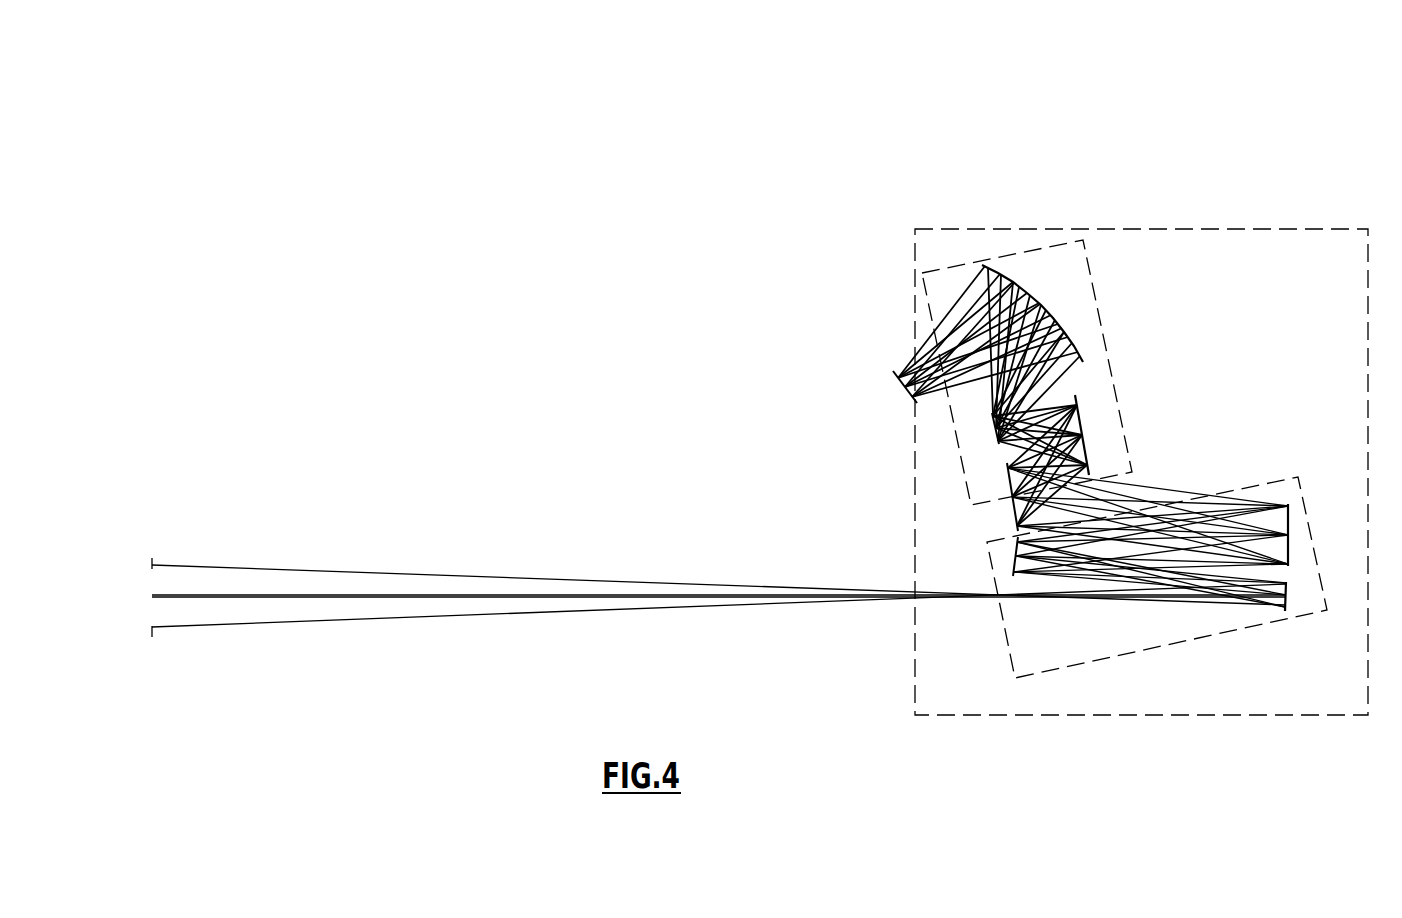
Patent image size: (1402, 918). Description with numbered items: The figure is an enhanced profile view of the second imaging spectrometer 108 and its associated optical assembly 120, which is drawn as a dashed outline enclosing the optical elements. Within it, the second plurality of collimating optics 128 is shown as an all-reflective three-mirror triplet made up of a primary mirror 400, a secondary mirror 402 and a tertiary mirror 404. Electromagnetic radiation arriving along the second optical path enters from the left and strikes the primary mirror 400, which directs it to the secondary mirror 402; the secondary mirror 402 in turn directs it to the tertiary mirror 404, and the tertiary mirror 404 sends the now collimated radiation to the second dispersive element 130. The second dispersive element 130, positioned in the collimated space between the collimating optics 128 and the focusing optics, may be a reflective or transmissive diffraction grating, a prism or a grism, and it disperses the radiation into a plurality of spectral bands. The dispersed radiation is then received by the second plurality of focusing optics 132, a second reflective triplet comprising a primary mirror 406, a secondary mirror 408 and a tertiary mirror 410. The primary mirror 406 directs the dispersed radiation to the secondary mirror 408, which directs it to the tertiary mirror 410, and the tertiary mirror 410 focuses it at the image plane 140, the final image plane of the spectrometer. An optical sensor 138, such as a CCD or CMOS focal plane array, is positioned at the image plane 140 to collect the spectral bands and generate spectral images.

The second imaging spectrometer 108 is at (766, 372).
The optical assembly 120 is at (1213, 229).
The second plurality of collimating optics 128 is at (1263, 482).
The second dispersive element 130 is at (1012, 500).
The second plurality of focusing optics 132 is at (1107, 338).
The optical sensor 138 is at (898, 388).
The image plane 140 is at (890, 362).
The primary mirror 400 is at (1287, 602).
The secondary mirror 402 is at (1012, 566).
The tertiary mirror 404 is at (1290, 548).
The primary mirror 406 is at (1083, 440).
The secondary mirror 408 is at (993, 425).
The tertiary mirror 410 is at (1033, 291).